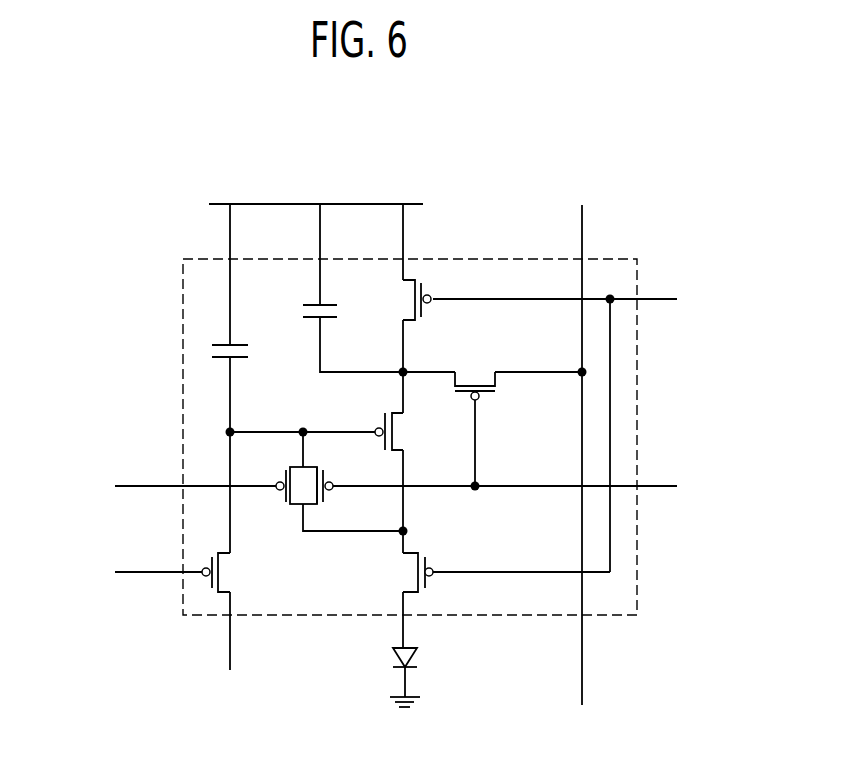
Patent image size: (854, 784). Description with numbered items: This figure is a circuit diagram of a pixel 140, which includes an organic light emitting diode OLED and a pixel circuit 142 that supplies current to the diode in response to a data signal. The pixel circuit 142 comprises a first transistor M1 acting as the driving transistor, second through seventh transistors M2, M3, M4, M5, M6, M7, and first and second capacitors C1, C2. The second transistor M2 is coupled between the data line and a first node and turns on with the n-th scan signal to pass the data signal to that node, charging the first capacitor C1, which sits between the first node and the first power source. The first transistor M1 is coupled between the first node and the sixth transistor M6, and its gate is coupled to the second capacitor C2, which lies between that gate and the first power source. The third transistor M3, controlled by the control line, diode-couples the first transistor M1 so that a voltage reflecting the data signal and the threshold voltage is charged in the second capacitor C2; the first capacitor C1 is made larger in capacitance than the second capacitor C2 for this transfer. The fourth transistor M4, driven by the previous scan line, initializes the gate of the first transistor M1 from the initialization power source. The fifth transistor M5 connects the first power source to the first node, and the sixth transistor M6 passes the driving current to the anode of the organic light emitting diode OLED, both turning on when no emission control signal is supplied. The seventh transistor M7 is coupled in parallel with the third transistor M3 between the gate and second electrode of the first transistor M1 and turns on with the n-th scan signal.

The pixel 140 is at (675, 130).
The pixel circuit 142 is at (634, 258).
The first transistor M1 is at (400, 431).
The second transistor M2 is at (475, 376).
The third transistor M3 is at (285, 480).
The fourth transistor M4 is at (228, 572).
The fifth transistor M5 is at (408, 300).
The sixth transistor M6 is at (410, 572).
The seventh transistor M7 is at (333, 480).
The first capacitor C1 is at (333, 315).
The second capacitor C2 is at (243, 357).
The organic light emitting diode OLED is at (430, 677).